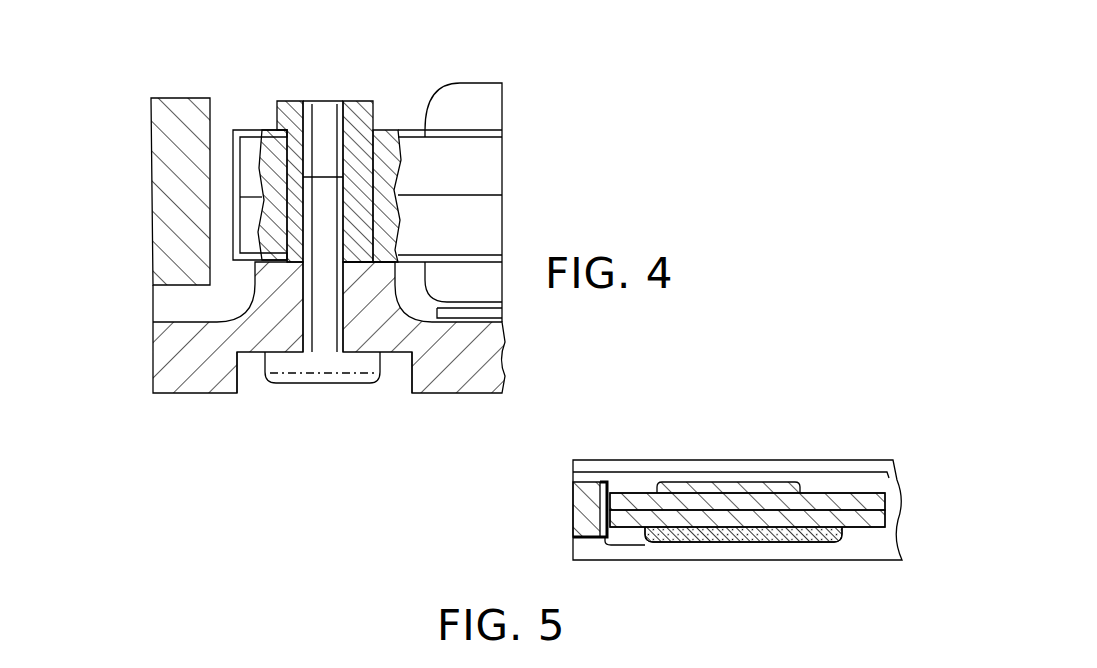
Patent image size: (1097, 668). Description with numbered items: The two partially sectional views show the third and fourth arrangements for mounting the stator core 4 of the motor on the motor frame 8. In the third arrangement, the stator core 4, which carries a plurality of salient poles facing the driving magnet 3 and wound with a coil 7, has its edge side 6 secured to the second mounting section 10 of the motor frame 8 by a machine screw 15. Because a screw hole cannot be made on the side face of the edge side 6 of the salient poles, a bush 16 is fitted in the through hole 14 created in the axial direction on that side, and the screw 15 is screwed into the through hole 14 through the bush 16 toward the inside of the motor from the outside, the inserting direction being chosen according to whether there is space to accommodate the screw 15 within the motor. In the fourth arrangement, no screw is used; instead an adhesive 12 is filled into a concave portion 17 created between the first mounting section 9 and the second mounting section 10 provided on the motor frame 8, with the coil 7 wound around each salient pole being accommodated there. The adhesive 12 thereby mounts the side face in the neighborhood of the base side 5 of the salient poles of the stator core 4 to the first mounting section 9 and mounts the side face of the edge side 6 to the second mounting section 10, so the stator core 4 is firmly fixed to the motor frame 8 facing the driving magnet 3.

In FIG. 4, the driving magnet 3 is at (173, 265).
In FIG. 5, the driving magnet 3 is at (585, 468).
In FIG. 4, the stator core 4 is at (417, 167).
In FIG. 5, the stator core 4 is at (723, 503).
In FIG. 5, the base side 5 is at (878, 490).
In FIG. 4, the edge side 6 is at (250, 228).
In FIG. 5, the edge side 6 is at (608, 519).
In FIG. 4, the coil 7 is at (472, 102).
In FIG. 5, the coil 7 is at (767, 488).
In FIG. 4, the motor frame 8 is at (478, 365).
In FIG. 5, the motor frame 8 is at (762, 550).
In FIG. 5, the first mounting section 9 is at (876, 525).
In FIG. 4, the second mounting section 10 is at (278, 315).
In FIG. 5, the second mounting section 10 is at (622, 540).
In FIG. 5, the adhesive 12 is at (806, 541).
In FIG. 4, the through hole 14 is at (285, 157).
In FIG. 4, the machine screw 15 is at (358, 362).
In FIG. 4, the bush 16 is at (288, 100).
In FIG. 5, the concave portion 17 is at (690, 541).